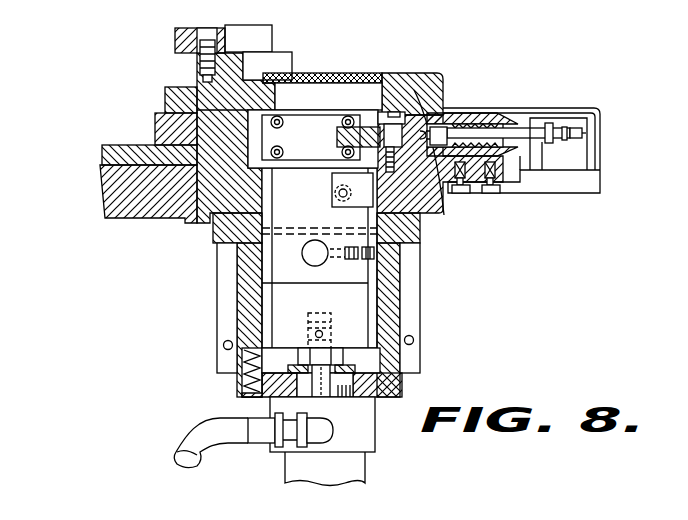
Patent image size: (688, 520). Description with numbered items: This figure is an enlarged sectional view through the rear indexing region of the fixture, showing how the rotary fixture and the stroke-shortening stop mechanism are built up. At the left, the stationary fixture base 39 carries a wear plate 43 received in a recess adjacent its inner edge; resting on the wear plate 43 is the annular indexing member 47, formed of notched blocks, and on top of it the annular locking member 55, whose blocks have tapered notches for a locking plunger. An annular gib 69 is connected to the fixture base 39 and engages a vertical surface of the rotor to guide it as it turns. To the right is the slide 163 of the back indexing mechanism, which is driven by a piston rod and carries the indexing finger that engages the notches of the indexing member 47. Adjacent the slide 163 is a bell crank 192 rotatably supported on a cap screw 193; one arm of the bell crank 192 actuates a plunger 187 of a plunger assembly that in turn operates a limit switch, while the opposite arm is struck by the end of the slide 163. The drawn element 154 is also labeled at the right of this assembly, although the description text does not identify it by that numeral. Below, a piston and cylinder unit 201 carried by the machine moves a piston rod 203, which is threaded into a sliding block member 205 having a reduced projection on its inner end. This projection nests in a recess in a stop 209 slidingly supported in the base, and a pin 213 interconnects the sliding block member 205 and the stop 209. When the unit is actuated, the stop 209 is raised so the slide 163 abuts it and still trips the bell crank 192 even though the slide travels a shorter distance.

The fixture base 39 is at (117, 200).
The wear plate 43 is at (102, 153).
The annular indexing member 47 is at (155, 128).
The annular locking member 55 is at (160, 100).
The annular gib 69 is at (174, 42).
The bracket 154 is at (582, 152).
The slide 163 is at (322, 135).
The plunger 187 is at (520, 130).
The bell crank 192 is at (374, 124).
The cap screw 193 is at (421, 111).
The piston and cylinder unit 201 is at (377, 446).
The piston rod 203 is at (322, 382).
The sliding block member 205 is at (360, 316).
The stop 209 is at (357, 236).
The pin 213 is at (313, 267).